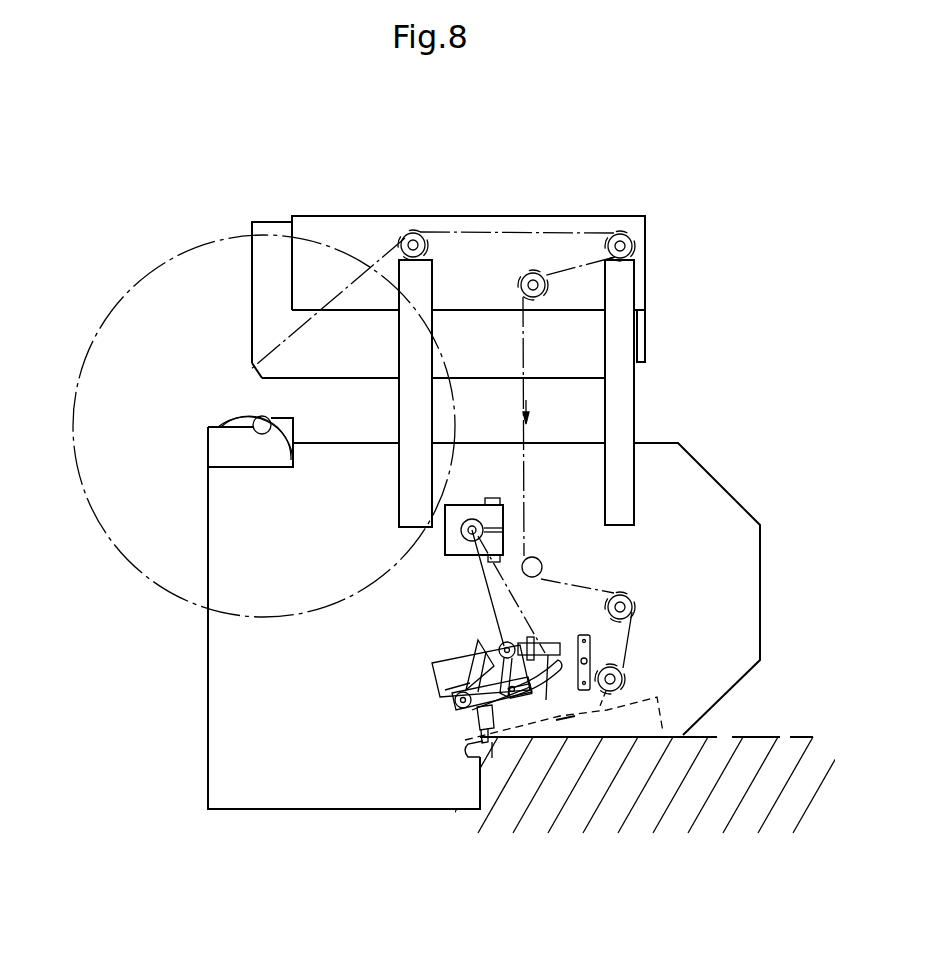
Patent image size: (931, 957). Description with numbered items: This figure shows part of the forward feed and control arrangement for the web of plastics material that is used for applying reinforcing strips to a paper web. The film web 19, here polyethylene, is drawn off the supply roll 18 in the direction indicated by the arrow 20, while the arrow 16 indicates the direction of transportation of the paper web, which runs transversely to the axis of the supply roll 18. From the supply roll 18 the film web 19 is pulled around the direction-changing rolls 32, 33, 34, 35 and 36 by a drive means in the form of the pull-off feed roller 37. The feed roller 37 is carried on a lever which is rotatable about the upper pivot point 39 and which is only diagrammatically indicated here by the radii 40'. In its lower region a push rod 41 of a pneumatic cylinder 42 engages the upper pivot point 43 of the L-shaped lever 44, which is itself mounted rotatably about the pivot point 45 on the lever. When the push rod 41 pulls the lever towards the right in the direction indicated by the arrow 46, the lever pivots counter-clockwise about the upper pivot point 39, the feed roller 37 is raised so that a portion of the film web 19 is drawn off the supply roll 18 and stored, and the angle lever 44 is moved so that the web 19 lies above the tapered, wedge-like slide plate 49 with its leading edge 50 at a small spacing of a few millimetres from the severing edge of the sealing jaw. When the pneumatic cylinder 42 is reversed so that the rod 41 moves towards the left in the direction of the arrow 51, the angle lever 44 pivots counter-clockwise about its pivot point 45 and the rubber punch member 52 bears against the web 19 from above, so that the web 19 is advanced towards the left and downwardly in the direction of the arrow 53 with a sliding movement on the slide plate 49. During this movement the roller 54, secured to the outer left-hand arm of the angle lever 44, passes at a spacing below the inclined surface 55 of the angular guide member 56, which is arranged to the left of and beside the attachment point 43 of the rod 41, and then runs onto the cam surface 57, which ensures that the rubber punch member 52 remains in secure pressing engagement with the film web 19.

The arrow 16 is at (762, 738).
The supply roll 18 is at (118, 533).
The film web 19 is at (628, 645).
The arrow 20 is at (528, 407).
The direction-changing roll 32 is at (413, 241).
The direction-changing roll 33 is at (620, 240).
The direction-changing roll 34 is at (533, 279).
The direction-changing roll 35 is at (535, 557).
The direction-changing roll 36 is at (623, 680).
The pull-off feed roller 37 is at (623, 594).
The upper pivot point 39 is at (470, 532).
The radii 40' is at (484, 591).
The push rod 41 is at (528, 642).
The pneumatic cylinder 42 is at (546, 656).
The upper pivot point 43 is at (508, 642).
The L-shaped lever 44 is at (483, 690).
The pivot point 45 is at (514, 700).
The arrow 46 is at (560, 643).
The slide plate 49 is at (626, 731).
The leading edge 50 is at (492, 756).
The arrow 51 is at (547, 648).
The rubber punch member 52 is at (476, 731).
The arrow 53 is at (575, 720).
The roller 54 is at (455, 703).
The inclined surface 55 is at (470, 684).
The angular guide member 56 is at (436, 665).
The cam surface 57 is at (445, 690).